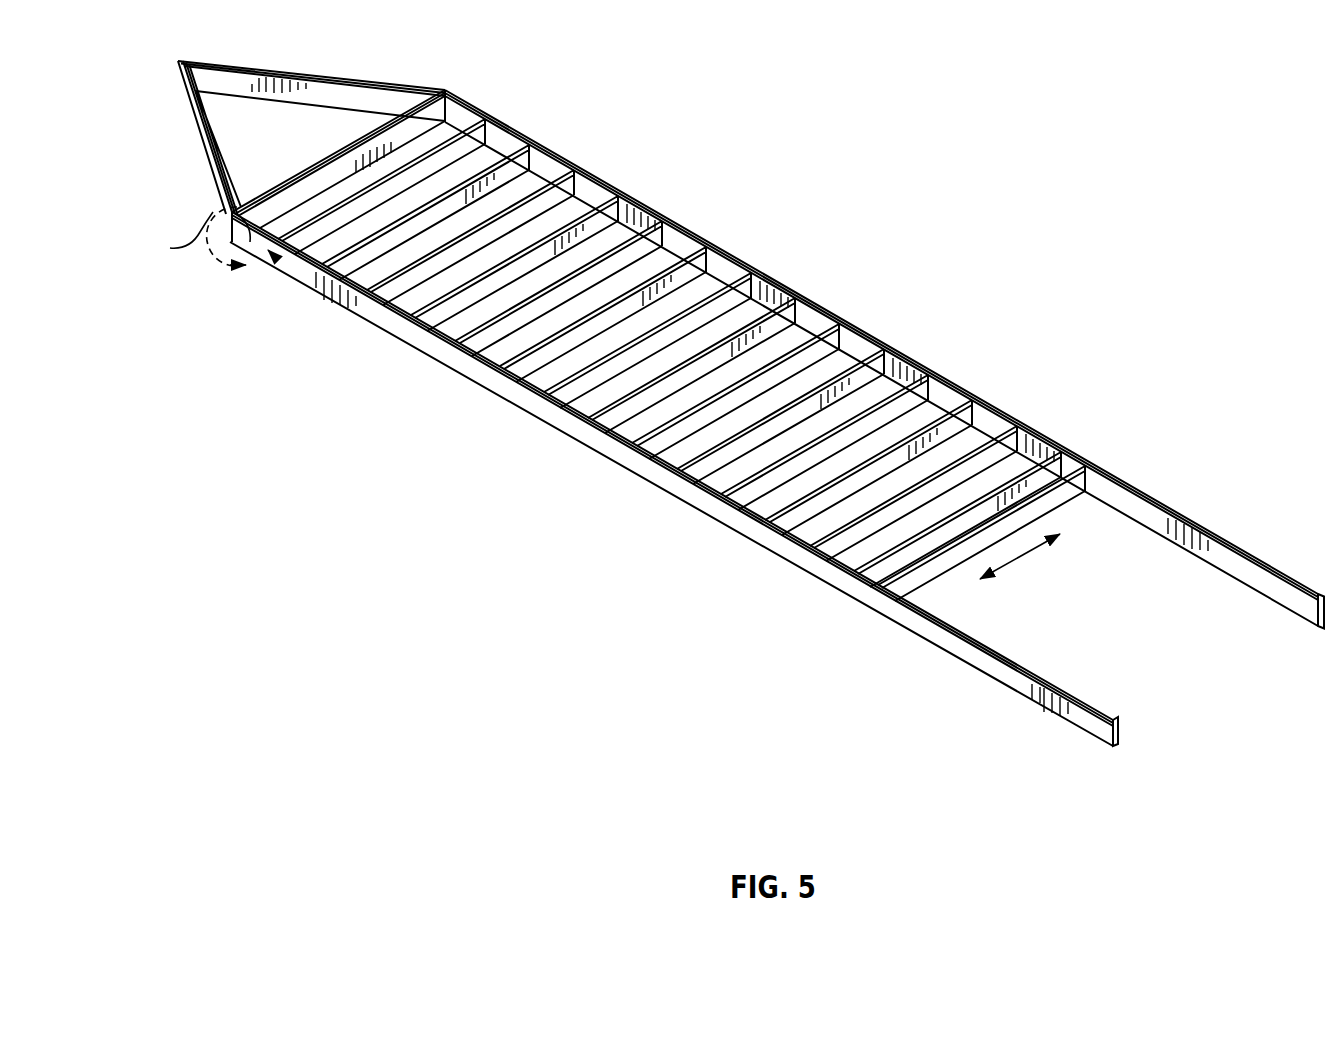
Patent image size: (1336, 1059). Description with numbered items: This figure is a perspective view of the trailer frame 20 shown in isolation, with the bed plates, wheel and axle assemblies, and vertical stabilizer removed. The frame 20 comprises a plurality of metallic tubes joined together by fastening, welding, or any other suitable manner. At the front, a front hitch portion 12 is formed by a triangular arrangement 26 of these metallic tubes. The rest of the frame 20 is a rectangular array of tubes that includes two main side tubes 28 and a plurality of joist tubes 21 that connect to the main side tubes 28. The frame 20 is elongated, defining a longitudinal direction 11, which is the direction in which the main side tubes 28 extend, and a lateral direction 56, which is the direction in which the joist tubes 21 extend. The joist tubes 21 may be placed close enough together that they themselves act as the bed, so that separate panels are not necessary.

The longitudinal direction 11 is at (699, 386).
The front hitch portion 12 is at (281, 127).
The frame 20 is at (633, 473).
The joist tubes 21 is at (722, 298).
The triangular arrangement 26 is at (360, 92).
The main side tubes 28 is at (777, 418).
The lateral direction 56 is at (1025, 562).